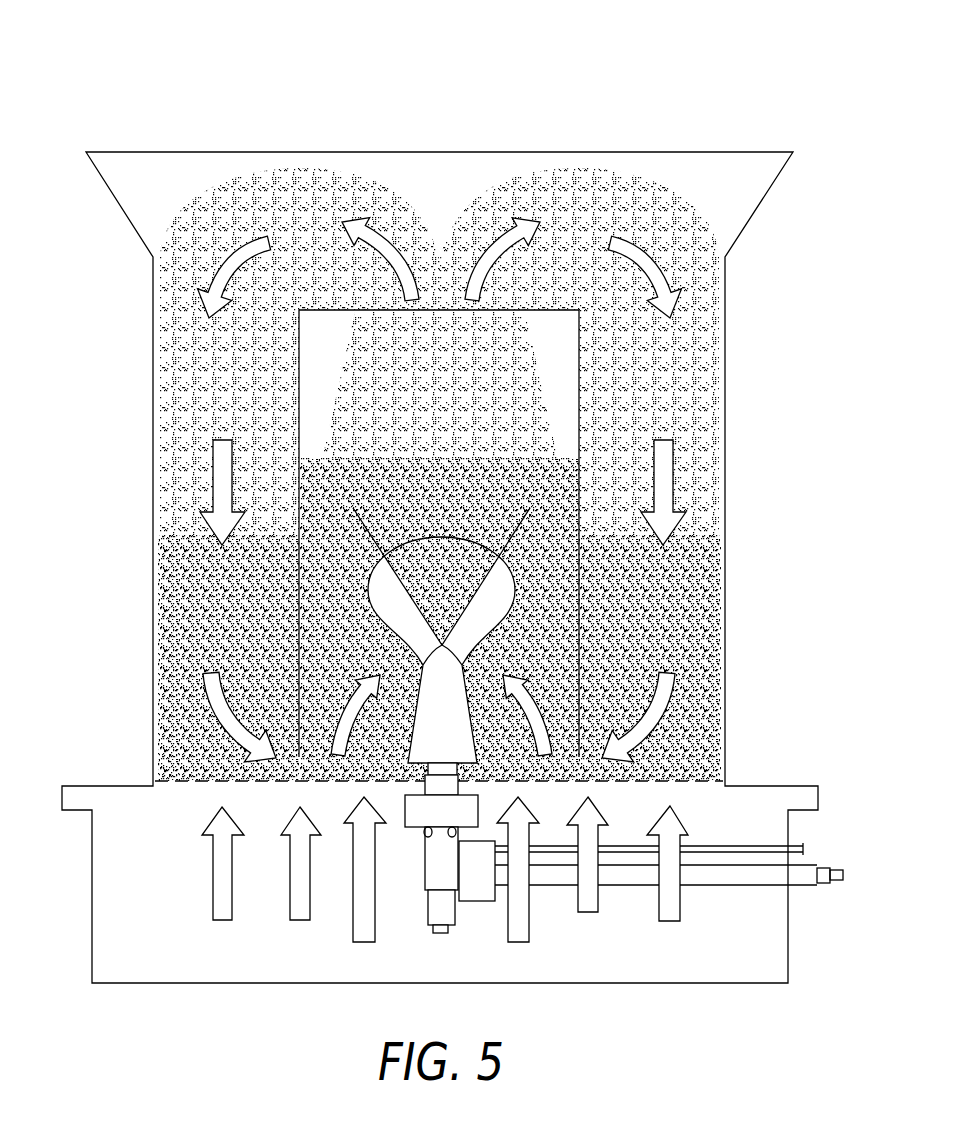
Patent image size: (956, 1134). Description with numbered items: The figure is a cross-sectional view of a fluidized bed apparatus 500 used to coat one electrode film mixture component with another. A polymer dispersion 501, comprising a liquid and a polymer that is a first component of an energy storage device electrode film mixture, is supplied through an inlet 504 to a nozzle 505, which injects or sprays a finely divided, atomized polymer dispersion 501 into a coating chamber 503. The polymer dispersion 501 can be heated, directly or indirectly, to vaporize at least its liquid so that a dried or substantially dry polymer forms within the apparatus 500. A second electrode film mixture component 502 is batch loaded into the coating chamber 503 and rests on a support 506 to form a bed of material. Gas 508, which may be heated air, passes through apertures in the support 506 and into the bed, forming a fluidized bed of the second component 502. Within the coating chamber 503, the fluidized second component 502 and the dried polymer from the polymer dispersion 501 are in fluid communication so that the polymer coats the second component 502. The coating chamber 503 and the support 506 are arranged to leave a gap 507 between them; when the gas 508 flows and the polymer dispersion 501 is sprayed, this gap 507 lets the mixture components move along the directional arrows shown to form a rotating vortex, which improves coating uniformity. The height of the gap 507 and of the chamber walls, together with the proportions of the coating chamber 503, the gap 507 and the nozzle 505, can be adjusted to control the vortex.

The fluidized bed apparatus 500 is at (133, 88).
The polymer dispersion 501 is at (460, 556).
The second electrode film mixture component 502 is at (702, 726).
The coating chamber 503 is at (580, 636).
The inlet 504 is at (753, 880).
The nozzle 505 is at (473, 731).
The support 506 is at (213, 778).
The gap 507 is at (291, 758).
The gas 508 is at (212, 885).